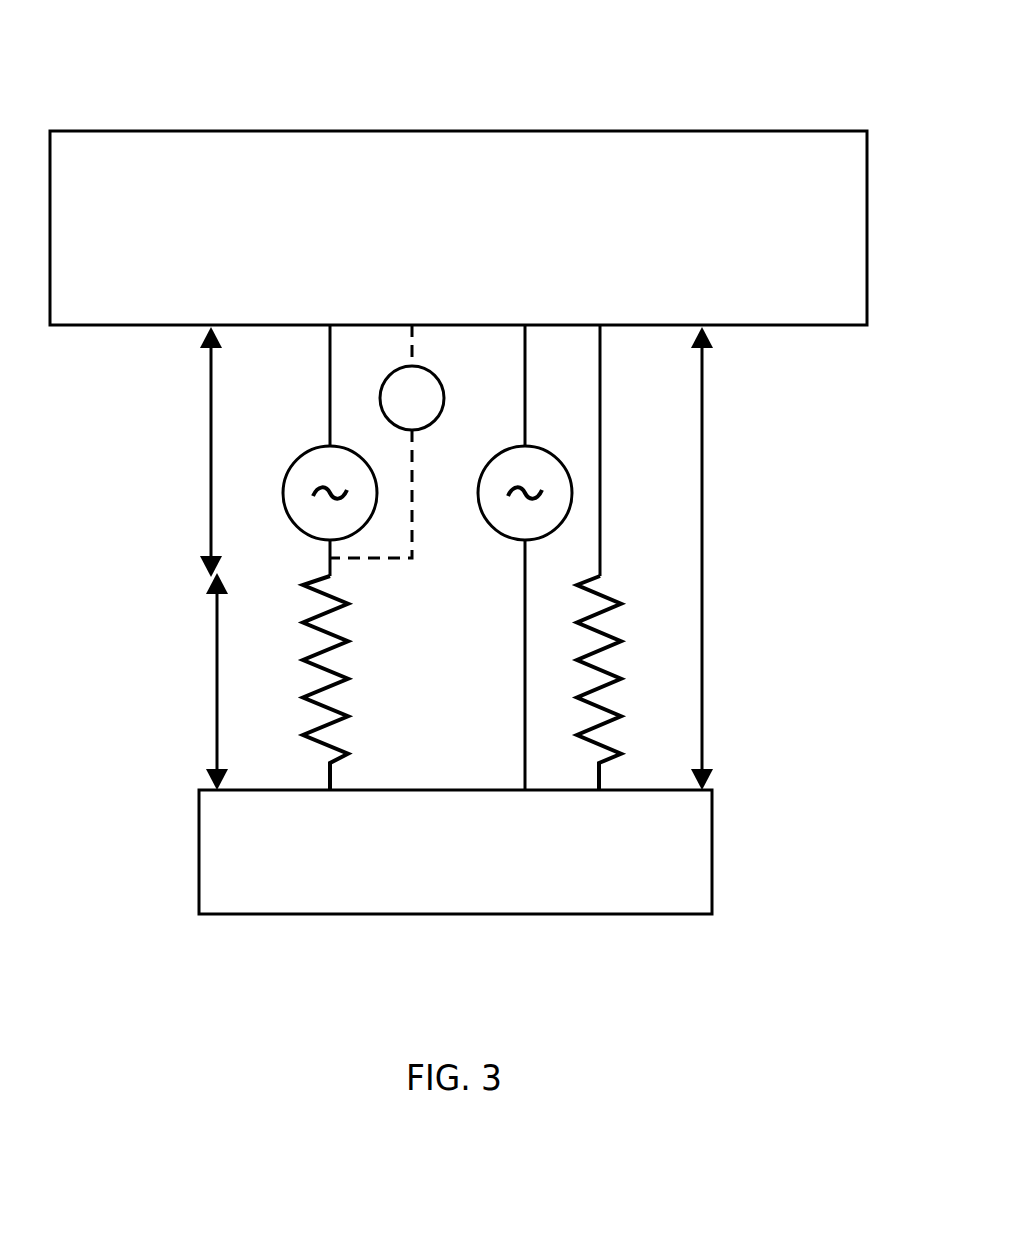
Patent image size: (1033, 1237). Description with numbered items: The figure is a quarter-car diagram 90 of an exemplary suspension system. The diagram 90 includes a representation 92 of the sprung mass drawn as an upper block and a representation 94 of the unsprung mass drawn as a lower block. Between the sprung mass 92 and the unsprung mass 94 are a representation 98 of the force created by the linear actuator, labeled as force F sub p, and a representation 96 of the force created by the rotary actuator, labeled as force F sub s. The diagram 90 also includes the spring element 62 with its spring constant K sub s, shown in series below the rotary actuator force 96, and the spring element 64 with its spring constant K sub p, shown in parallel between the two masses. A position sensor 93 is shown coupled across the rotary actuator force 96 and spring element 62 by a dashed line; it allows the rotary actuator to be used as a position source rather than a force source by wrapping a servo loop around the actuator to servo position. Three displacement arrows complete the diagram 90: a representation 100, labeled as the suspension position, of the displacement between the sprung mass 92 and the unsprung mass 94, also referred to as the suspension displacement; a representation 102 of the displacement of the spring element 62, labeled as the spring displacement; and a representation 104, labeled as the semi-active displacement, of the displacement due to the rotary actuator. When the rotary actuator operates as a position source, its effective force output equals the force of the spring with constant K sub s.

The quarter-car diagram 90 is at (120, 74).
The representation of the sprung mass 92 is at (627, 131).
The representation of the unsprung mass 94 is at (712, 852).
The position sensor 93 is at (444, 396).
The representation of the force created by the rotary actuator 96 is at (284, 490).
The representation of the force created by the linear actuator 98 is at (545, 450).
The spring element 62 is at (335, 724).
The spring element 64 is at (606, 622).
The representation of the suspension displacement 100 is at (704, 453).
The representation of the displacement of the spring element 102 is at (215, 640).
The representation of the displacement due to the rotary actuator 104 is at (209, 395).